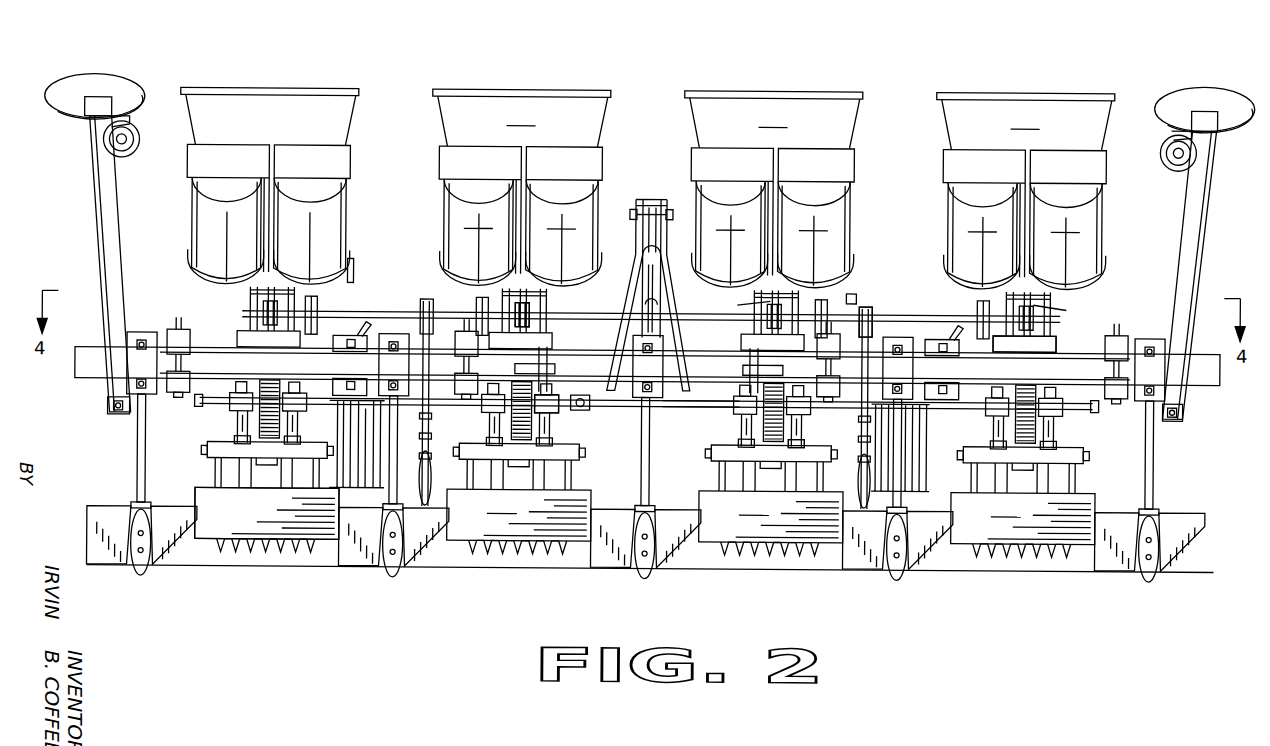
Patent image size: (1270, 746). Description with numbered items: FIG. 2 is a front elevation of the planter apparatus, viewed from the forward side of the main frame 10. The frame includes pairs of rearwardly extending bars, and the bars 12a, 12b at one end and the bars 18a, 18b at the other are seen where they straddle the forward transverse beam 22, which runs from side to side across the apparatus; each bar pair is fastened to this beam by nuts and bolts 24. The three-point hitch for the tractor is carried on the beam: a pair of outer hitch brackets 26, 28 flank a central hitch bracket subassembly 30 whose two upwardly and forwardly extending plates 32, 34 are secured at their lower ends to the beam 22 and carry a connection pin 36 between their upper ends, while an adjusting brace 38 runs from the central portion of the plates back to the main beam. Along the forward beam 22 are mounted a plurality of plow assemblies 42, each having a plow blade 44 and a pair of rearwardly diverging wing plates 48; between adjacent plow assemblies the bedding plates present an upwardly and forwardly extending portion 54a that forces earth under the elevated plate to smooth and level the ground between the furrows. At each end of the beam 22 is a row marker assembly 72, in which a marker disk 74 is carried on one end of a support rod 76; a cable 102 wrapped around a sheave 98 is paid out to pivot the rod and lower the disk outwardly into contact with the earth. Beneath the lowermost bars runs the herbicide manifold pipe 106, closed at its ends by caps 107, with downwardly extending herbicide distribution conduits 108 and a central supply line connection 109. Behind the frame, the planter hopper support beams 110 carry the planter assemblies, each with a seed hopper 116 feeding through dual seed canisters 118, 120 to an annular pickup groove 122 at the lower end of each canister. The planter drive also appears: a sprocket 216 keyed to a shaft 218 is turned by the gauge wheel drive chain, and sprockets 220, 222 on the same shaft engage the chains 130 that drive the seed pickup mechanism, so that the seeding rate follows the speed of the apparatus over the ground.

The main frame 10 is at (228, 330).
The rearwardly extending bar 12a is at (1106, 345).
The rearwardly extending bar 12b is at (1101, 406).
The rearwardly extending bar 18a is at (172, 338).
The rearwardly extending bar 18b is at (174, 393).
The forward transverse beam 22 is at (201, 350).
The nuts and bolts 24 is at (182, 326).
The outer hitch bracket 26 is at (530, 364).
The outer hitch bracket 28 is at (757, 360).
The central hitch bracket subassembly 30 is at (652, 193).
The upwardly and forwardly extending plate 32 is at (622, 298).
The upwardly and forwardly extending plate 34 is at (665, 282).
The connection pin 36 is at (637, 199).
The adjusting brace 38 is at (654, 317).
The plow assembly 42 is at (133, 440).
The plow blade 44 is at (140, 576).
The rearwardly diverging wing plates 48 is at (112, 482).
The upwardly and forwardly extending portion of bedding plate 54a is at (266, 512).
The row marker assembly 72 is at (92, 207).
The marker disk 74 is at (116, 72).
The support rod 76 is at (82, 112).
The pulley or sheave 98 is at (112, 143).
The cable 102 is at (122, 102).
The herbicide manifold pipe 106 is at (688, 404).
The caps 107 is at (198, 404).
The herbicide distribution conduits 108 is at (551, 431).
The supply line connection 109 is at (808, 435).
The planter hopper support beam 110 is at (1024, 344).
The seed hopper 116 is at (282, 124).
The seed hopper 118 is at (240, 227).
The dual seed canisters 120 is at (323, 227).
The annular pickup groove 122 is at (353, 284).
The chain 130 is at (530, 302).
The sprocket 216 is at (870, 311).
The shaft 218 is at (347, 314).
The sprocket 220 is at (985, 308).
The sprocket 222 is at (852, 298).